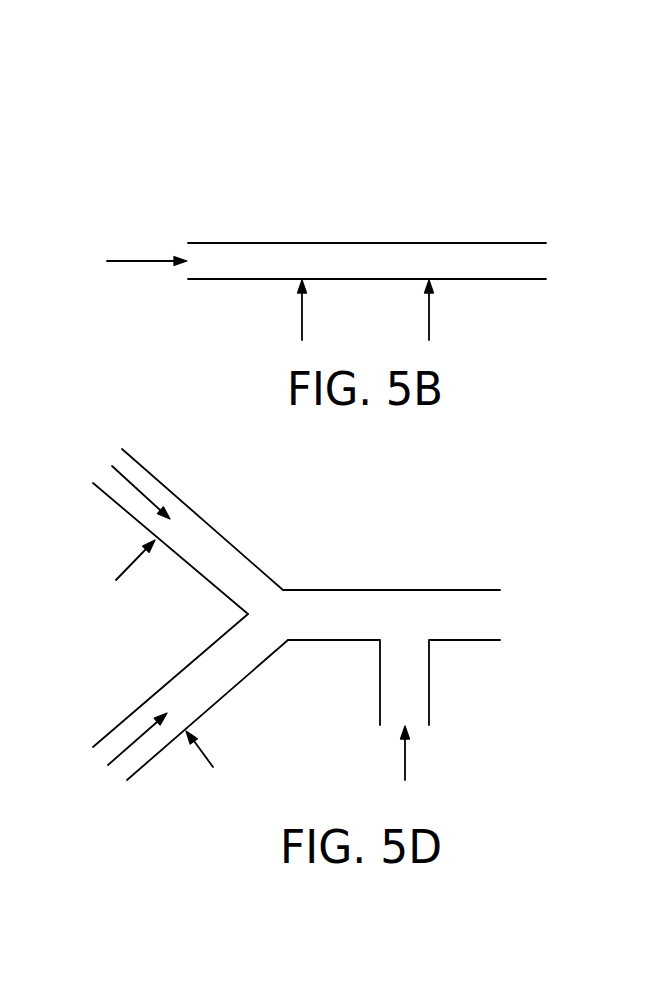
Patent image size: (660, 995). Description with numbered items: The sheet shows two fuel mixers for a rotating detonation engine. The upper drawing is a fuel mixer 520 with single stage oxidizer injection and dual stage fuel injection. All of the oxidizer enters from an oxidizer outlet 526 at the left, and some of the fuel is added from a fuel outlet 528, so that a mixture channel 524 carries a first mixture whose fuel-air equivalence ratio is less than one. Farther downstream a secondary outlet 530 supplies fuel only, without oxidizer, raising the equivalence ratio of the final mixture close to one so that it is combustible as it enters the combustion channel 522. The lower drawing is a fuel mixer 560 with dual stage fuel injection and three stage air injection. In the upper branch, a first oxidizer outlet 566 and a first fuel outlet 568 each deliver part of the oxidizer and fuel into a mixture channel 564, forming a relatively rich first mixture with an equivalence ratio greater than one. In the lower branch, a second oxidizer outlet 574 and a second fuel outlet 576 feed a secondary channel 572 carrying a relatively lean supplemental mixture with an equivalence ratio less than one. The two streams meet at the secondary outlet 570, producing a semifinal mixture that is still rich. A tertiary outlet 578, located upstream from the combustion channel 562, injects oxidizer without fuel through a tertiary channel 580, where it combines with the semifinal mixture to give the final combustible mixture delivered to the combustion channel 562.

In FIG. 5B, the fuel mixer 520 is at (588, 148).
In FIG. 5B, the combustion channel 522 is at (543, 246).
In FIG. 5B, the mixture channel 524 is at (351, 281).
In FIG. 5B, the oxidizer outlet 526 is at (107, 261).
In FIG. 5B, the fuel outlet 528 is at (302, 324).
In FIG. 5B, the secondary outlet 530 is at (429, 323).
In FIG. 5D, the fuel mixer 560 is at (598, 604).
In FIG. 5D, the combustion channel 562 is at (457, 628).
In FIG. 5D, the mixture channel 564 is at (229, 582).
In FIG. 5D, the first oxidizer outlet 566 is at (113, 467).
In FIG. 5D, the first fuel outlet 568 is at (125, 571).
In FIG. 5D, the secondary outlet 570 is at (283, 633).
In FIG. 5D, the secondary channel 572 is at (236, 662).
In FIG. 5D, the second oxidizer outlet 574 is at (117, 755).
In FIG. 5D, the second fuel outlet 576 is at (213, 767).
In FIG. 5D, the tertiary outlet 578 is at (405, 757).
In FIG. 5D, the tertiary channel 580 is at (419, 686).